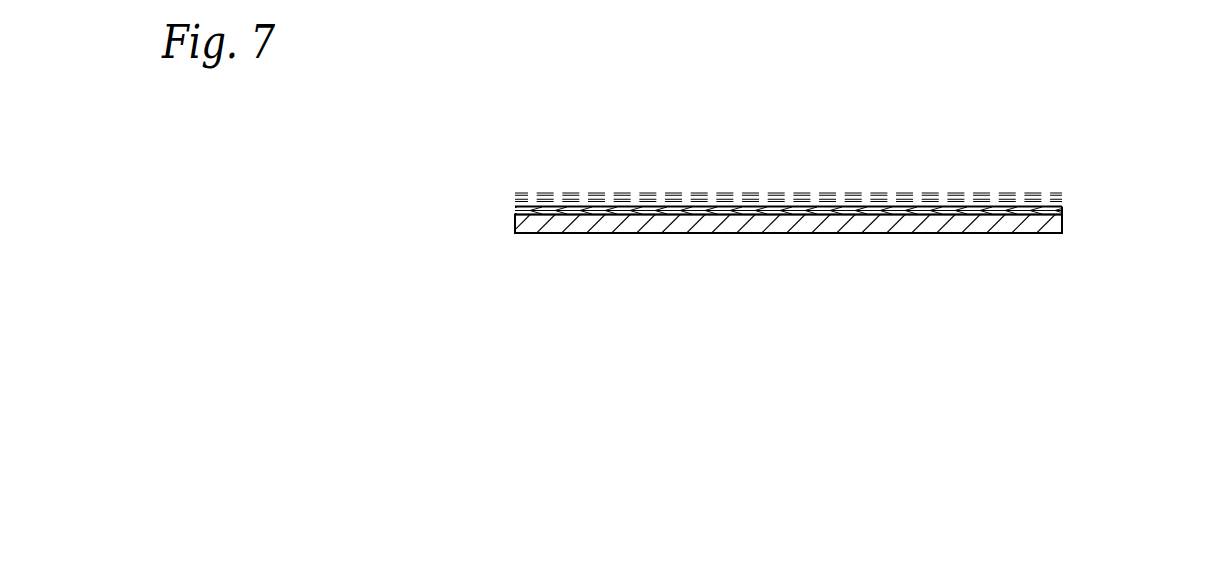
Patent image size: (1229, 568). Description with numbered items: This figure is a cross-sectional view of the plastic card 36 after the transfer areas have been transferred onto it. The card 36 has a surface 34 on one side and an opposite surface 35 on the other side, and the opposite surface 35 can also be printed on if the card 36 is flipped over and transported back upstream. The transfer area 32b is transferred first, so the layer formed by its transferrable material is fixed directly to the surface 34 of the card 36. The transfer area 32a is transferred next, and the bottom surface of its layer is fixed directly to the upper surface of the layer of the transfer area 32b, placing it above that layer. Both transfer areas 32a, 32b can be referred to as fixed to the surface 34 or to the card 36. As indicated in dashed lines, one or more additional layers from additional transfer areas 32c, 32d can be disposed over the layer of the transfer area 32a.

The transfer area 32a is at (1062, 212).
The transfer area 32b is at (1062, 213).
The additional transfer area 32c is at (515, 205).
The additional transfer area 32d is at (515, 195).
The surface 34 is at (708, 213).
The opposite surface 35 is at (647, 233).
The card 36 is at (796, 248).